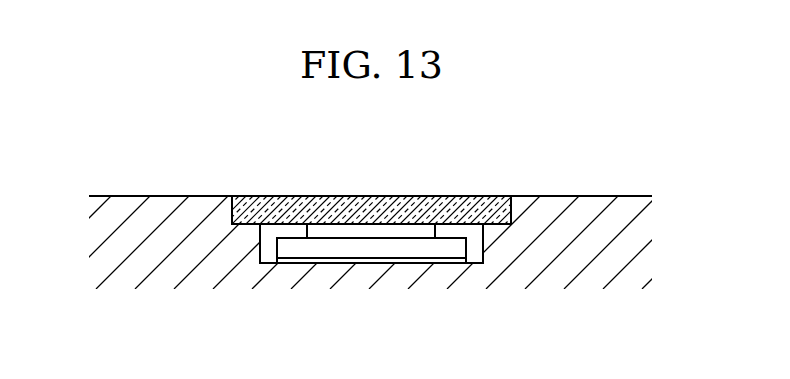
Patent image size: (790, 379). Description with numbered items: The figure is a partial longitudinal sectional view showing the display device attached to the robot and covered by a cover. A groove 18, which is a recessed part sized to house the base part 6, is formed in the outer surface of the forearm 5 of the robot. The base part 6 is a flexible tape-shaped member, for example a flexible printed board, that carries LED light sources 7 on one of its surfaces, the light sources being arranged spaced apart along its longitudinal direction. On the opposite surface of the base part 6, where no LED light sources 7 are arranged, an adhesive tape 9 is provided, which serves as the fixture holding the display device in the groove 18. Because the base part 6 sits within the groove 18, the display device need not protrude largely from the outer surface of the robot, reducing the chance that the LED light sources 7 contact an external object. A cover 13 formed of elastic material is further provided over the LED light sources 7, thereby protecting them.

The forearm 5 is at (162, 196).
The cover 13 is at (256, 196).
The LED light source 7 is at (330, 220).
The groove 18 is at (475, 237).
The base part 6 is at (370, 238).
The adhesive tape 9 is at (410, 261).